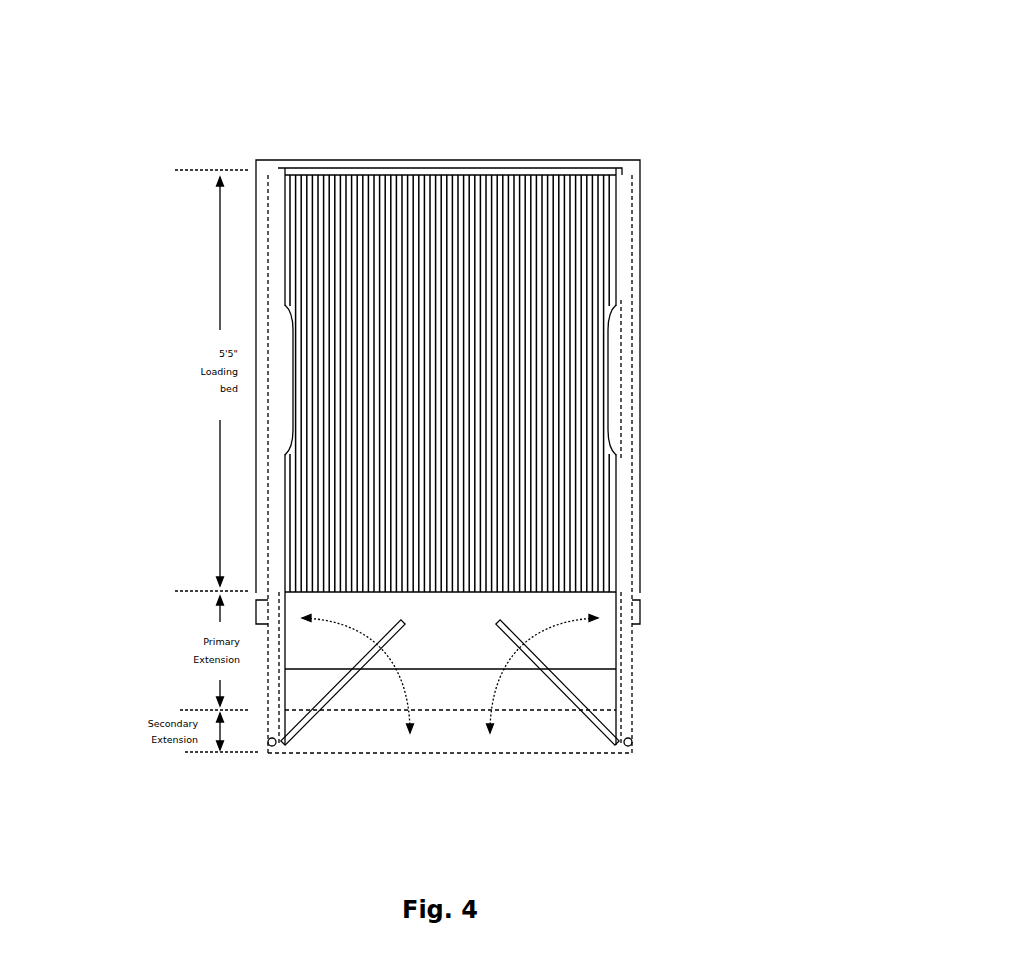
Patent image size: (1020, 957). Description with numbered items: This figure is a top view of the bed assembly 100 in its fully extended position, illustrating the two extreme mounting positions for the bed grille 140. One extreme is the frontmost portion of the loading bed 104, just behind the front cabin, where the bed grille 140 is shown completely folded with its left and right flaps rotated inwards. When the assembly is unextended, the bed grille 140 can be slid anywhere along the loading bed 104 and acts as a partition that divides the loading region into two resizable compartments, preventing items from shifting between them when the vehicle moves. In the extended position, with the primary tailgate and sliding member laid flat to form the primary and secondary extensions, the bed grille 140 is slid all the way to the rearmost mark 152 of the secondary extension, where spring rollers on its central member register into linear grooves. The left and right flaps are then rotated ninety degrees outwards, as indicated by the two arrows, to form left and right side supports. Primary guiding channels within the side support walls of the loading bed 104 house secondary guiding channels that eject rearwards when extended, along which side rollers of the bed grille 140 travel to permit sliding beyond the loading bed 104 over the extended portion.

The bed assembly 100 is at (443, 102).
The bed grille 140 is at (542, 162).
The loading bed 104 is at (581, 306).
The rearmost mark 152 is at (392, 764).